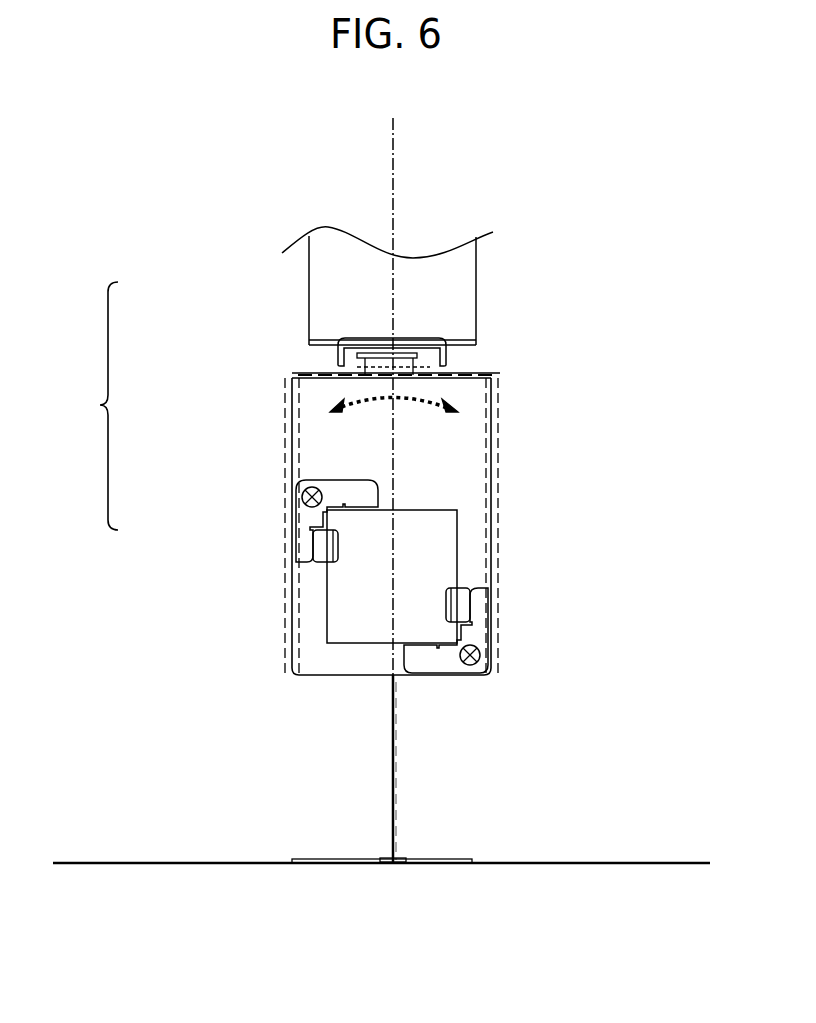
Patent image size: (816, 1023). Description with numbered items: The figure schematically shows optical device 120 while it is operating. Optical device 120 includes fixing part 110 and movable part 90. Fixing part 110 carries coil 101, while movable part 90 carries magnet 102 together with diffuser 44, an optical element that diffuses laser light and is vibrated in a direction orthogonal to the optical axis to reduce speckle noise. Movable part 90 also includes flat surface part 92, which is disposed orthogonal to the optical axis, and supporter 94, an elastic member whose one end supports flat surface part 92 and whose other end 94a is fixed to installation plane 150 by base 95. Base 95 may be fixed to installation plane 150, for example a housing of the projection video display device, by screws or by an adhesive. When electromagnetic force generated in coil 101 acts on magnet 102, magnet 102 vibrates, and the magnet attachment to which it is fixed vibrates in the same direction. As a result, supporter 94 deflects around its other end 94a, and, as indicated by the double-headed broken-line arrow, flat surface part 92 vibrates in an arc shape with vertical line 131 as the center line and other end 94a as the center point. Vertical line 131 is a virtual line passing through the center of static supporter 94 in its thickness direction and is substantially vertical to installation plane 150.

The vertical line 131 is at (395, 187).
The fixing part 110 is at (292, 281).
The coil 101 is at (393, 353).
The magnet 102 is at (405, 367).
The optical device 120 is at (84, 406).
The movable part 90 is at (272, 545).
The flat surface part 92 is at (443, 473).
The diffuser 44 is at (425, 540).
The supporter 94 is at (394, 770).
The other end 94a is at (394, 858).
The base 95 is at (320, 859).
The installation plane 150 is at (582, 862).